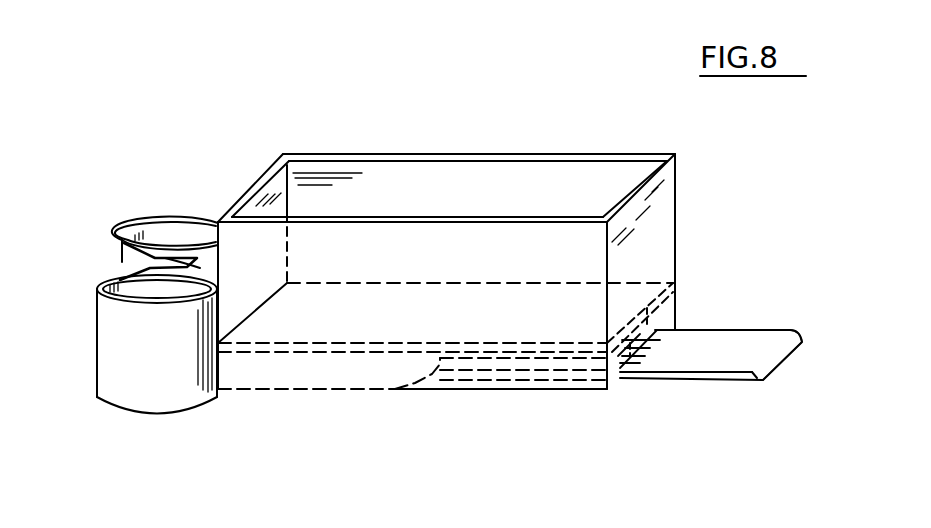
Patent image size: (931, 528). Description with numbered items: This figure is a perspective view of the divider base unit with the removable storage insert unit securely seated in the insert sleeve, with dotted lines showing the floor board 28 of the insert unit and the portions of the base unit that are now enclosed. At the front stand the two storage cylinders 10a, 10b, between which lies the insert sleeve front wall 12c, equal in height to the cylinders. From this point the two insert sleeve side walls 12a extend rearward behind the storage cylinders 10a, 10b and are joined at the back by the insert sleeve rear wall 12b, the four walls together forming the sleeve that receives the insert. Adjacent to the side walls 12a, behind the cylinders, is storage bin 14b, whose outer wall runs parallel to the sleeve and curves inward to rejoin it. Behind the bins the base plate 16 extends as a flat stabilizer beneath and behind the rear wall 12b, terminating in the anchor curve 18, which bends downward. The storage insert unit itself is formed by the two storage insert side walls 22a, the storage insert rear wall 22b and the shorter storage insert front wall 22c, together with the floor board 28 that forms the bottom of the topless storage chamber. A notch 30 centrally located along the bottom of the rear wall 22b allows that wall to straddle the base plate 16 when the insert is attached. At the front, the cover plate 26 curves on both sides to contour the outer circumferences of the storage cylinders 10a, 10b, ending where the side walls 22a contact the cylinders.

The storage cylinder 10a is at (180, 232).
The storage cylinder 10b is at (137, 317).
The insert sleeve side wall 12a is at (618, 348).
The insert sleeve rear wall 12b is at (640, 337).
The insert sleeve front wall 12c is at (153, 257).
The storage bin 14b is at (388, 375).
The base plate 16 is at (733, 340).
The anchor curve 18 is at (777, 353).
The storage insert side wall 22a is at (390, 218).
The storage insert rear wall 22b is at (657, 197).
The storage insert front wall 22c is at (281, 196).
The cover plate 26 is at (203, 267).
The floor board 28 is at (348, 308).
The notch 30 is at (677, 332).